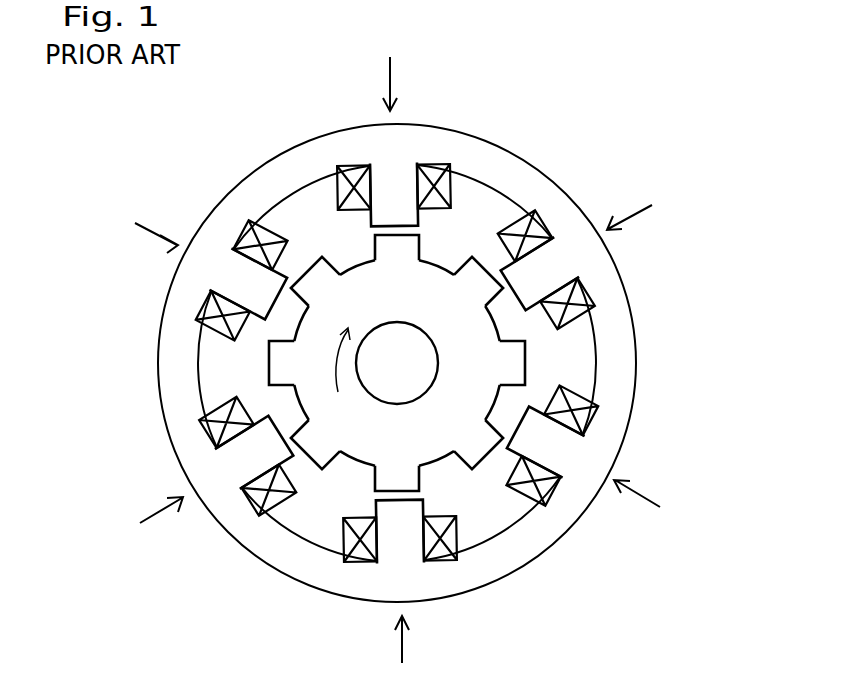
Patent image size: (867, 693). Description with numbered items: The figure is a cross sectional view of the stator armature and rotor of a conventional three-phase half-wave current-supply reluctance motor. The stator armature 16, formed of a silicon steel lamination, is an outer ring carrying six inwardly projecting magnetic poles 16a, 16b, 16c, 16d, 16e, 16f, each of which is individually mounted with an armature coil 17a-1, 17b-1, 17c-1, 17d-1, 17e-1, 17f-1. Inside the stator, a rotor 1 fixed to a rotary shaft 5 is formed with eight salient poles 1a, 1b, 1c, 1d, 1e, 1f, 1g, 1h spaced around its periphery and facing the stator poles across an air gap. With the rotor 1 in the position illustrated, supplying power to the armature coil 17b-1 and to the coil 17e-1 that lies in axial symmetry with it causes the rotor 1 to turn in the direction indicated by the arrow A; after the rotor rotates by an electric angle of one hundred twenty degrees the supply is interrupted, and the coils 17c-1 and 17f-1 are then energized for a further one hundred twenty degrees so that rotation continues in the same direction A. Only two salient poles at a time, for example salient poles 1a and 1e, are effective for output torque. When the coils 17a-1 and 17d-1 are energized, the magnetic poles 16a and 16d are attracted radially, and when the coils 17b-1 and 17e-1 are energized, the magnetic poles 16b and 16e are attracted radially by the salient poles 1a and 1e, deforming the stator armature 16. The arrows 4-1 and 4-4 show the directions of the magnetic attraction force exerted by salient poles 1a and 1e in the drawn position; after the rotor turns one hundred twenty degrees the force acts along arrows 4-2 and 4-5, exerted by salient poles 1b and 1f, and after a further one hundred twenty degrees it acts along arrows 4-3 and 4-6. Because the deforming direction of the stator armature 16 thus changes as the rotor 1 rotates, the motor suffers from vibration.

The rotor 1 is at (488, 376).
The salient pole 1a is at (417, 229).
The salient pole 1b is at (479, 258).
The salient pole 1c is at (527, 352).
The salient pole 1d is at (515, 460).
The salient pole 1e is at (388, 496).
The salient pole 1f is at (307, 466).
The salient pole 1g is at (267, 362).
The salient pole 1h is at (307, 272).
The rotary shaft 5 is at (412, 402).
The stator armature 16 is at (530, 177).
The magnetic pole 16a is at (383, 228).
The magnetic pole 16b is at (546, 287).
The magnetic pole 16c is at (512, 408).
The magnetic pole 16d is at (428, 502).
The magnetic pole 16e is at (265, 424).
The magnetic pole 16f is at (283, 305).
The armature coil 17a-1 is at (437, 172).
The armature coil 17b-1 is at (585, 304).
The armature coil 17c-1 is at (545, 495).
The armature coil 17d-1 is at (355, 556).
The armature coil 17e-1 is at (212, 428).
The armature coil 17f-1 is at (265, 250).
The arrow 4-1 is at (395, 72).
The arrow 4-2 is at (631, 217).
The arrow 4-3 is at (640, 497).
The arrow 4-4 is at (402, 646).
The arrow 4-5 is at (157, 513).
The arrow 4-6 is at (155, 231).
The arrow A is at (330, 358).